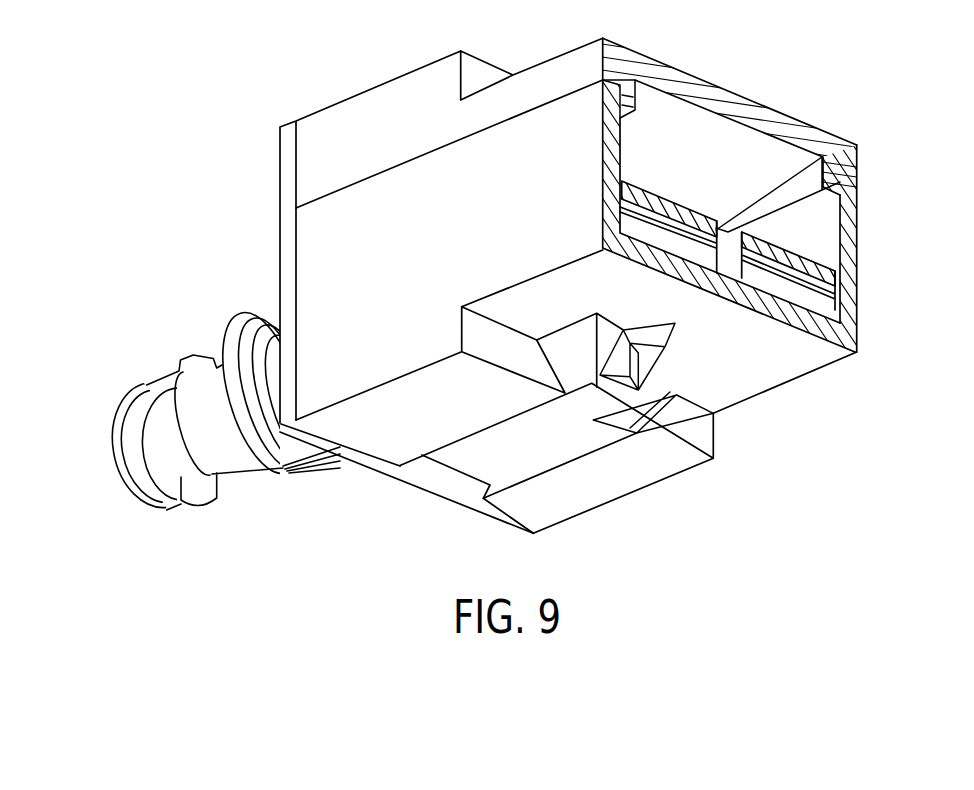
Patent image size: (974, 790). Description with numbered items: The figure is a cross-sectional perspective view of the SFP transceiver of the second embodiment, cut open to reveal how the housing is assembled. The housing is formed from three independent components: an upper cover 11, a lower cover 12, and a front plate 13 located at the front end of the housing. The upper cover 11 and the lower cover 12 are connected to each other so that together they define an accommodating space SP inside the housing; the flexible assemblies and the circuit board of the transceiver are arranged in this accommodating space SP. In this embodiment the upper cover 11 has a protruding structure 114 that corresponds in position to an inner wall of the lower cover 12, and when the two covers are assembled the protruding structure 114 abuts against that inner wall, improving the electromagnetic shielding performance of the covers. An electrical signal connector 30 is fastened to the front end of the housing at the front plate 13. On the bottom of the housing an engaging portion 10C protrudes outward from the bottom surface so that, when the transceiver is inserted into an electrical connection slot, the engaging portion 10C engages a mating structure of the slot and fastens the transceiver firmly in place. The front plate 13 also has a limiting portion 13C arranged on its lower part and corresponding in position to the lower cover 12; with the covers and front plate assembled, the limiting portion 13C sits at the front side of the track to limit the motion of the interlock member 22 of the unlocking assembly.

The upper cover 11 is at (777, 118).
The lower cover 12 is at (850, 300).
The front plate 13 is at (292, 240).
The limiting portion 13C is at (443, 477).
The interlock member 22 is at (543, 447).
The electrical signal connector 30 is at (247, 463).
The engaging portion 10C is at (663, 343).
The protruding structure 114 is at (628, 102).
The accommodating space SP is at (808, 225).